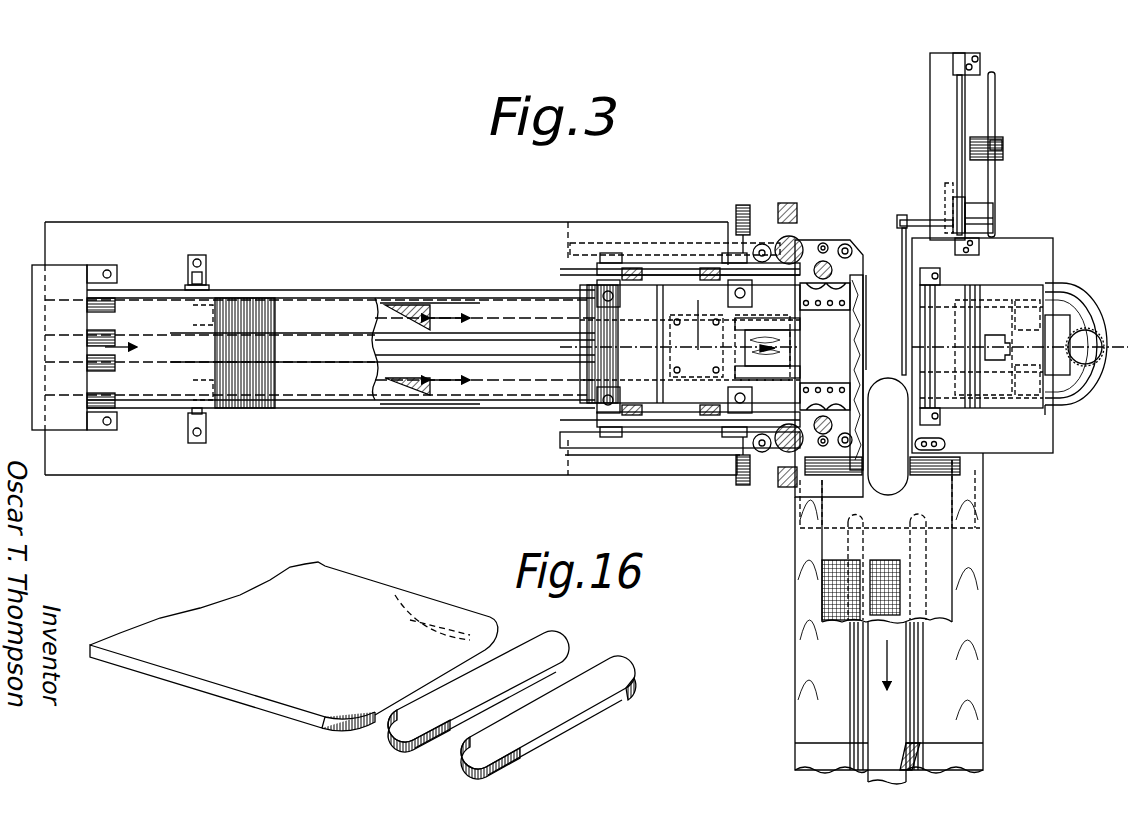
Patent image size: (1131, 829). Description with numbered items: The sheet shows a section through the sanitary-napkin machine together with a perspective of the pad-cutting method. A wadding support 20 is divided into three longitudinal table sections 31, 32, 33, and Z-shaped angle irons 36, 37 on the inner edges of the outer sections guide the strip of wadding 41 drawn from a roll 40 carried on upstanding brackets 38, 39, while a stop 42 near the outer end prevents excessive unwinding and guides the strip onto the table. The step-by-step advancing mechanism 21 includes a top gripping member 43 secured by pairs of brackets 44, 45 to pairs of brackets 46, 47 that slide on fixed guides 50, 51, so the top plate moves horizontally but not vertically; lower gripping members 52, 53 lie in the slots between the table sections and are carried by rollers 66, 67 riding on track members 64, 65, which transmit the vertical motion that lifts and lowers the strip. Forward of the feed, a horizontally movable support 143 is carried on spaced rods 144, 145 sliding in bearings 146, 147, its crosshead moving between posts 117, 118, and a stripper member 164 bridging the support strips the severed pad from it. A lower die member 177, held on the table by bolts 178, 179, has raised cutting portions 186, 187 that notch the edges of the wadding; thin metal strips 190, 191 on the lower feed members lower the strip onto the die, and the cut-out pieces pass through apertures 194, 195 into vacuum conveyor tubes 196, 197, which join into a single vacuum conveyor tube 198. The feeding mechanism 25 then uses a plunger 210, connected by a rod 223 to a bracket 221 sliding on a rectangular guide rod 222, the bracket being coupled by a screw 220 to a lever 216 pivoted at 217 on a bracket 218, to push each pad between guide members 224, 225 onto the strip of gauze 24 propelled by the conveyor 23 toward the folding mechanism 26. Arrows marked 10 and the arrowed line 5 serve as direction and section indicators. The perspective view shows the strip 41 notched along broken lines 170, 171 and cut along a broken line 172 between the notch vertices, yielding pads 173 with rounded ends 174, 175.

In FIG. 3, the section line arrow 5 is at (530, 380).
In FIG. 3, the direction of travel arrow / feed direction 10 is at (838, 210).
In FIG. 3, the support 20 is at (360, 272).
In FIG. 3, the mechanism for advancing the strip 21 is at (603, 255).
In FIG. 3, the conveyor 23 is at (900, 695).
In FIG. 3, the strip of gauze 24 is at (952, 568).
In FIG. 3, the mechanism for feeding the pads 25 is at (920, 216).
In FIG. 3, the folding mechanism 26 is at (925, 757).
In FIG. 3, the table section 31 is at (190, 222).
In FIG. 3, the table section 32 is at (470, 345).
In FIG. 3, the table section 33 is at (213, 475).
In FIG. 3, the Z-shaped angle iron 36 is at (445, 292).
In FIG. 3, the Z-shaped angle iron 37 is at (415, 402).
In FIG. 3, the upstanding bracket 38 is at (208, 282).
In FIG. 3, the upstanding bracket 39 is at (206, 425).
In FIG. 3, the roll of absorbent wadding 40 is at (175, 385).
In FIG. 16, the strip of wadding 41 is at (350, 590).
In FIG. 3, the stop 42 is at (70, 432).
In FIG. 3, the top plate or gripping member 43 is at (625, 345).
In FIG. 3, the bracket 44 is at (565, 410).
In FIG. 3, the bracket 45 is at (597, 300).
In FIG. 3, the bracket 46 is at (582, 436).
In FIG. 3, the bracket 47 is at (578, 262).
In FIG. 3, the track or guide 50 is at (690, 430).
In FIG. 3, the track or guide 51 is at (670, 263).
In FIG. 3, the lower gripping member 52 is at (478, 378).
In FIG. 3, the lower gripping member 53 is at (505, 310).
In FIG. 3, the track member 64 is at (640, 420).
In FIG. 3, the track member 65 is at (640, 268).
In FIG. 3, the roller 66 is at (712, 268).
In FIG. 3, the roller 67 is at (610, 253).
In FIG. 3, the post 117 is at (762, 452).
In FIG. 3, the post 118 is at (765, 244).
In FIG. 3, the horizontally movable table or support 143 is at (990, 285).
In FIG. 3, the rod 144 is at (1005, 408).
In FIG. 3, the rod 145 is at (1005, 300).
In FIG. 3, the bearing 146 is at (950, 418).
In FIG. 3, the bearing 147 is at (985, 300).
In FIG. 3, the stripper member 164 is at (920, 272).
In FIG. 16, the broken line 170 is at (285, 718).
In FIG. 16, the broken line 171 is at (450, 600).
In FIG. 16, the broken line 172 is at (525, 633).
In FIG. 16, the pad 173 is at (597, 663).
In FIG. 16, the rounded end 174 is at (455, 765).
In FIG. 16, the rounded end 175 is at (645, 682).
In FIG. 3, the lower die member 177 is at (849, 246).
In FIG. 3, the bolt 178 is at (820, 446).
In FIG. 3, the bolt 179 is at (828, 243).
In FIG. 3, the cutting portion 186 is at (866, 392).
In FIG. 3, the cutting portion 187 is at (855, 306).
In FIG. 3, the thin metal strip 190 is at (792, 330).
In FIG. 3, the thin metal strip 191 is at (780, 366).
In FIG. 3, the aperture 194 is at (825, 404).
In FIG. 3, the aperture 195 is at (825, 296).
In FIG. 3, the vacuum conveyor tube 196 is at (1064, 412).
In FIG. 3, the vacuum conveyor tube 197 is at (1065, 290).
In FIG. 3, the single vacuum conveyor tube 198 is at (1078, 400).
In FIG. 3, the plunger 210 is at (860, 380).
In FIG. 3, the lever 216 is at (995, 134).
In FIG. 3, the pivot 217 is at (1003, 152).
In FIG. 3, the bracket 218 is at (955, 220).
In FIG. 3, the screw 220 is at (995, 224).
In FIG. 3, the bracket 221 is at (963, 212).
In FIG. 3, the rectangular guide rod 222 is at (957, 100).
In FIG. 3, the rod 223 is at (900, 230).
In FIG. 3, the guide member 224 is at (870, 497).
In FIG. 3, the guide member 225 is at (912, 495).